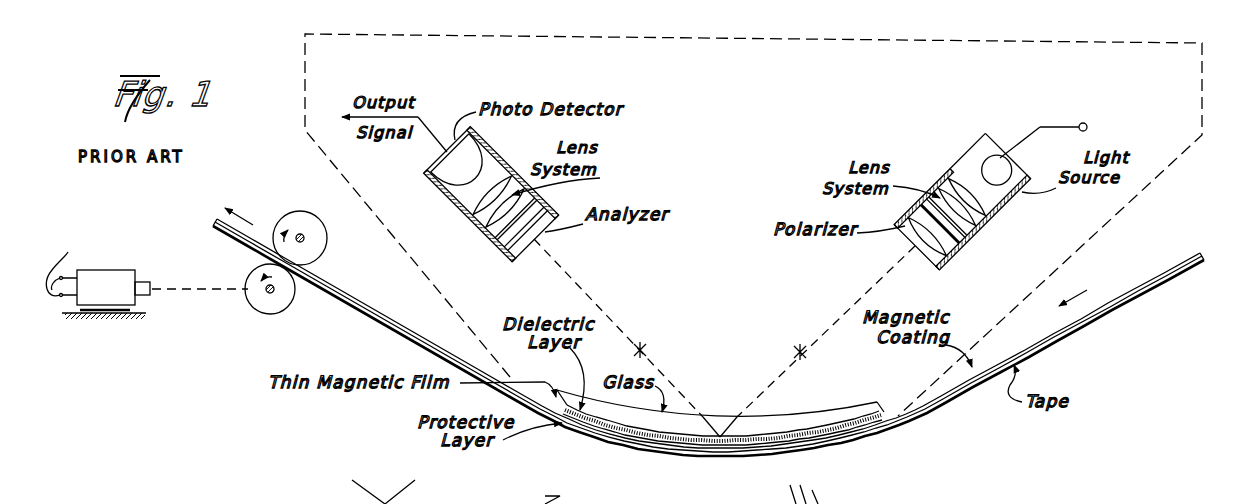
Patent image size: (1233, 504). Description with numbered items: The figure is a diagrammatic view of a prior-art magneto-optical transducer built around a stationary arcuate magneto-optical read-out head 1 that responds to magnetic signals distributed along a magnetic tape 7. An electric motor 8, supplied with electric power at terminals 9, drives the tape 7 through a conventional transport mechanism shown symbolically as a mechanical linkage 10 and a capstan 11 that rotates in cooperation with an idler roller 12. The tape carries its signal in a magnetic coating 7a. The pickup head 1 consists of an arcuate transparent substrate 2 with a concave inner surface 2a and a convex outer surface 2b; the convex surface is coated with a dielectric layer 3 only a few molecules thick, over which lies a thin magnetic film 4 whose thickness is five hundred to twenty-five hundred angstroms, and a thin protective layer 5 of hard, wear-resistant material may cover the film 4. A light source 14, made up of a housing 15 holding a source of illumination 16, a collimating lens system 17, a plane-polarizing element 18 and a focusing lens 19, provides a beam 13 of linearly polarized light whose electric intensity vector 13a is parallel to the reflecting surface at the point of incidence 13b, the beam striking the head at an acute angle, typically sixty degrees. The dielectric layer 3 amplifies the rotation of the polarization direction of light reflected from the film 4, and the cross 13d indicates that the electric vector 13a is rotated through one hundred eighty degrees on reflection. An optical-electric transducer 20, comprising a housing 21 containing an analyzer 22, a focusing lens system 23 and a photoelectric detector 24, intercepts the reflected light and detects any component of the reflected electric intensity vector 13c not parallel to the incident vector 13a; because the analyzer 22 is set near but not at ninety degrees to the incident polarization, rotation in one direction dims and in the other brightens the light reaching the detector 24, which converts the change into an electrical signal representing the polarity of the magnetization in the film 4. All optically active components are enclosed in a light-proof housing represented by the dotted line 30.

The magneto-optical read-out head 1 is at (853, 395).
The arcuate transparent substrate 2 is at (878, 405).
The concave inner surface 2a is at (772, 418).
The convex outer surface 2b is at (787, 430).
The dielectric layer 3 is at (598, 422).
The thin magnetic film 4 is at (628, 432).
The protective layer 5 is at (665, 440).
The magnetic tape 7 is at (364, 322).
The magnetic coating 7a is at (420, 326).
The electric motor 8 is at (120, 272).
The terminals 9 is at (62, 264).
The mechanical linkage 10 is at (195, 296).
The capstan 11 is at (277, 300).
The idler roller 12 is at (314, 240).
The beam of light 13 is at (830, 325).
The electric intensity vector 13a is at (799, 349).
The point of incidence 13b is at (721, 436).
The reflected electric intensity vector 13c is at (679, 383).
The cross 13d is at (641, 346).
The light source 14 is at (990, 200).
The housing 15 is at (1000, 206).
The source of illumination 16 is at (995, 160).
The collimating lens system 17 is at (965, 220).
The plane-polarizing element 18 is at (937, 258).
The focusing lens 19 is at (918, 262).
The optical-electric transducer 20 is at (501, 213).
The housing 21 is at (540, 206).
The analyzer 22 is at (506, 255).
The focusing lens system 23 is at (480, 226).
The photoelectric detector 24 is at (450, 162).
The light-proof housing 30 is at (1098, 244).